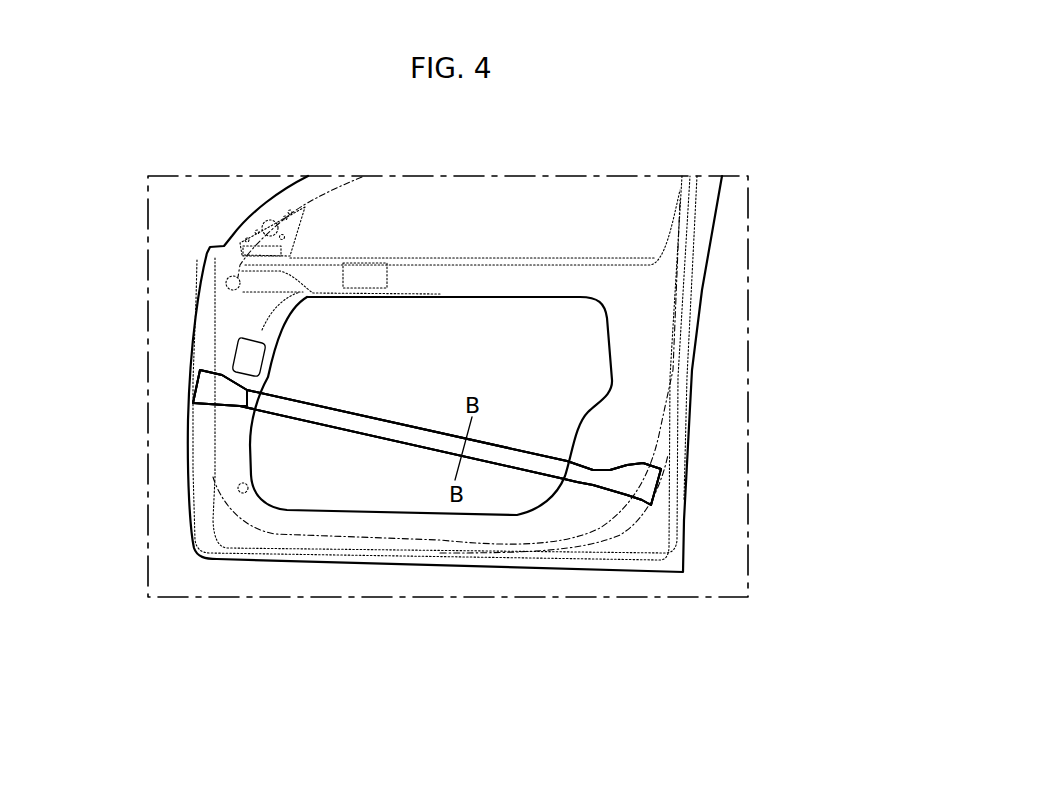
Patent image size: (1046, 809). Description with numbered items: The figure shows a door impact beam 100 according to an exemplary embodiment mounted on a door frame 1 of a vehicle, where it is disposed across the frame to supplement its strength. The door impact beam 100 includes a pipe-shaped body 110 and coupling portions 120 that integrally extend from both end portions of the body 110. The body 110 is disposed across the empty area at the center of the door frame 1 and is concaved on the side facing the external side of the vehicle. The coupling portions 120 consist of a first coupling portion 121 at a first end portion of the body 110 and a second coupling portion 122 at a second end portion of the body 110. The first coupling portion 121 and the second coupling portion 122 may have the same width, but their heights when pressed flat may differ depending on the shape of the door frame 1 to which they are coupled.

The door frame 1 is at (660, 321).
The door impact beam 100 is at (383, 472).
The body 110 is at (422, 438).
The coupling portions 120 is at (501, 543).
The first coupling portion 121 is at (205, 398).
The second coupling portion 122 is at (645, 486).